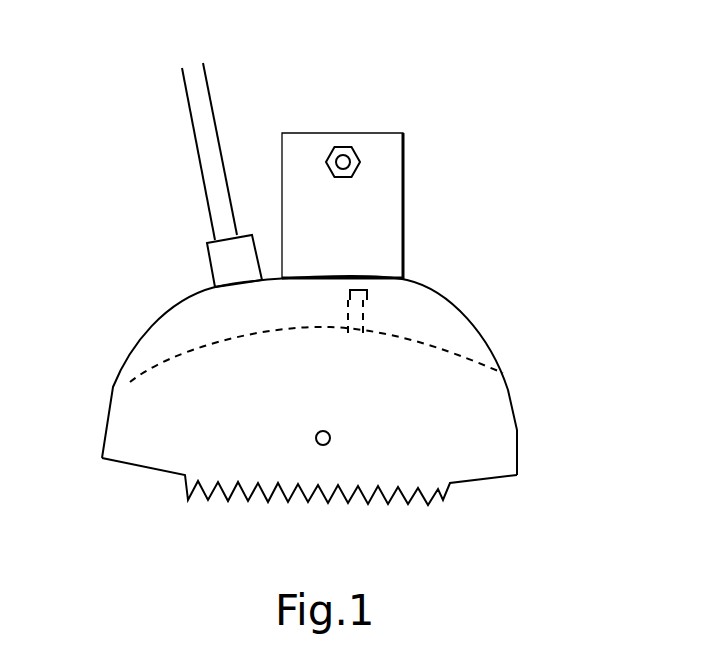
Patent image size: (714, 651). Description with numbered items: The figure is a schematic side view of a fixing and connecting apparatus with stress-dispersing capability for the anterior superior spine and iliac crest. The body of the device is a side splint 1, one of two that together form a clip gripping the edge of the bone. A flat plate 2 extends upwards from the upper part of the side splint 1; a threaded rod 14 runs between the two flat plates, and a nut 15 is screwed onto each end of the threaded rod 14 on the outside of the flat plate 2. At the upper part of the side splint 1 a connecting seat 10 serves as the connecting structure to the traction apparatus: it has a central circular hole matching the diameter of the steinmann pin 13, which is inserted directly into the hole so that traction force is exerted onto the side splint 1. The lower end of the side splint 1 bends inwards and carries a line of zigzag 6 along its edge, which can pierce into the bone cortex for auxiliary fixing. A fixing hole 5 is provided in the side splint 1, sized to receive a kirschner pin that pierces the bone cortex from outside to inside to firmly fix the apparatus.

The side splint 1 is at (187, 332).
The flat plate 2 is at (298, 142).
The fixing hole 5 is at (357, 290).
The zigzag 6 is at (233, 482).
The connecting seat 10 is at (207, 243).
The steinmann pin 13 is at (191, 117).
The threaded rod 14 is at (343, 148).
The nut 15 is at (360, 162).